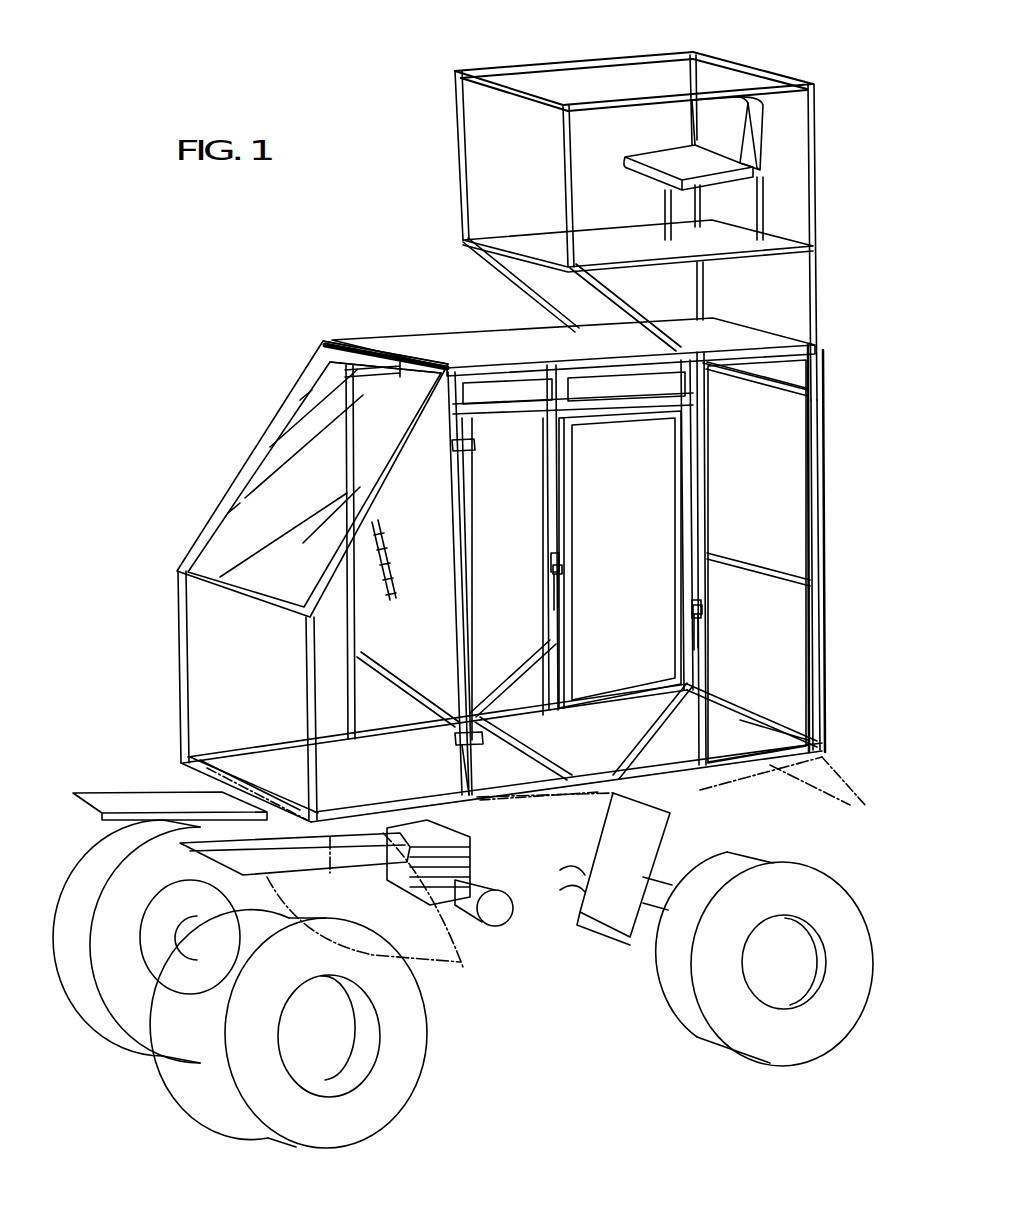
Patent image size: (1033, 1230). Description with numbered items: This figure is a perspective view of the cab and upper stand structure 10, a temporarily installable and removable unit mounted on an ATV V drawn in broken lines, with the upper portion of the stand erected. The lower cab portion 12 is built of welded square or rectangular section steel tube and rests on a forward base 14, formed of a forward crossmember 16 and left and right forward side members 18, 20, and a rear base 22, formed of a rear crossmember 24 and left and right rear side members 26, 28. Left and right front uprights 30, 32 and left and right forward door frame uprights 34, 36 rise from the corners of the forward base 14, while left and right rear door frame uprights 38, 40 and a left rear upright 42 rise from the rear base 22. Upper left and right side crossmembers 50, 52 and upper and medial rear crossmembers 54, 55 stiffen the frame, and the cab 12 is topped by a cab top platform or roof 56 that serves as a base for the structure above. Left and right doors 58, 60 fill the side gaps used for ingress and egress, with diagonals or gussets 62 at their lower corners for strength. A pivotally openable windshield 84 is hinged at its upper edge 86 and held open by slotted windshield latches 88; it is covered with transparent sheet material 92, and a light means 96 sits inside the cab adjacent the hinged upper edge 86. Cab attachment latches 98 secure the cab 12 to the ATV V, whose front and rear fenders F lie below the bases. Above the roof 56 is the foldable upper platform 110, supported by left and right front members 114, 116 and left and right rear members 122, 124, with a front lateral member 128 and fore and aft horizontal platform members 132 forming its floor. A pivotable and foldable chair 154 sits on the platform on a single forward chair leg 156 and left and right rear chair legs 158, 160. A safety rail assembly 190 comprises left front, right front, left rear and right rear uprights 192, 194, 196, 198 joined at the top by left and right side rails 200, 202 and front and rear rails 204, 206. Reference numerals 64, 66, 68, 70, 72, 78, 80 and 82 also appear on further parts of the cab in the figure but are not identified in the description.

The cab and upper stand structure 10 is at (303, 268).
The lower cab portion 12 is at (140, 653).
The forward base 14 is at (338, 868).
The forward crossmember 16 is at (258, 800).
The left forward side member 18 is at (388, 828).
The right forward side member 20 is at (275, 738).
The rear base 22 is at (825, 770).
The rear crossmember 24 is at (735, 706).
The left rear side member 26 is at (755, 790).
The right rear side member 28 is at (642, 694).
The left front upright 30 is at (322, 730).
The right front upright 32 is at (178, 688).
The left forward door frame upright 34 is at (450, 640).
The right forward door frame upright 36 is at (334, 506).
The left rear door frame upright 38 is at (712, 618).
The right rear door frame upright 40 is at (572, 528).
The left rear upright 42 is at (822, 528).
The upper left side crossmember 50 is at (722, 415).
The upper right side crossmember 52 is at (612, 398).
The upper rear crossmember 54 is at (800, 382).
The medial rear crossmember 55 is at (746, 555).
The cab top platform or roof 56 is at (455, 328).
The left door 58 is at (680, 492).
The right door 60 is at (546, 494).
The diagonals or gussets 62 is at (468, 684).
The side post 64 is at (458, 470).
The post foot 66 is at (470, 748).
The side post 68 is at (348, 462).
The post bracket 70 is at (476, 450).
The post bracket 72 is at (460, 744).
The hinge pin 78 is at (566, 604).
The hinge 80 is at (566, 572).
The hinge bracket 82 is at (556, 538).
The windshield 84 is at (200, 518).
The upper edge 86 is at (322, 376).
The slotted windshield latches 88 is at (375, 562).
The transparent sheet material 92 is at (268, 548).
The light means 96 is at (392, 396).
The cab attachment latches 98 is at (298, 790).
The foldable upper platform 110 is at (530, 236).
The left front member 114 is at (612, 300).
The right front member 116 is at (502, 277).
The left rear member 122 is at (820, 306).
The right rear member 124 is at (705, 294).
The front lateral member 128 is at (548, 275).
The fore and aft horizontal platform members 132 is at (652, 262).
The chair 154 is at (672, 156).
The forward chair leg 156 is at (663, 194).
The left rear chair leg 158 is at (763, 194).
The right rear chair leg 160 is at (700, 194).
The safety rail assembly 190 is at (553, 46).
The left front upright 192 is at (560, 156).
The right front upright 194 is at (464, 132).
The left rear upright 196 is at (818, 158).
The right rear upright 198 is at (690, 78).
The left side rail 200 is at (610, 100).
The right side rail 202 is at (636, 56).
The front rail 204 is at (518, 90).
The rear rail 206 is at (757, 68).
The front and rear fenders F is at (468, 895).
The ATV V is at (503, 960).